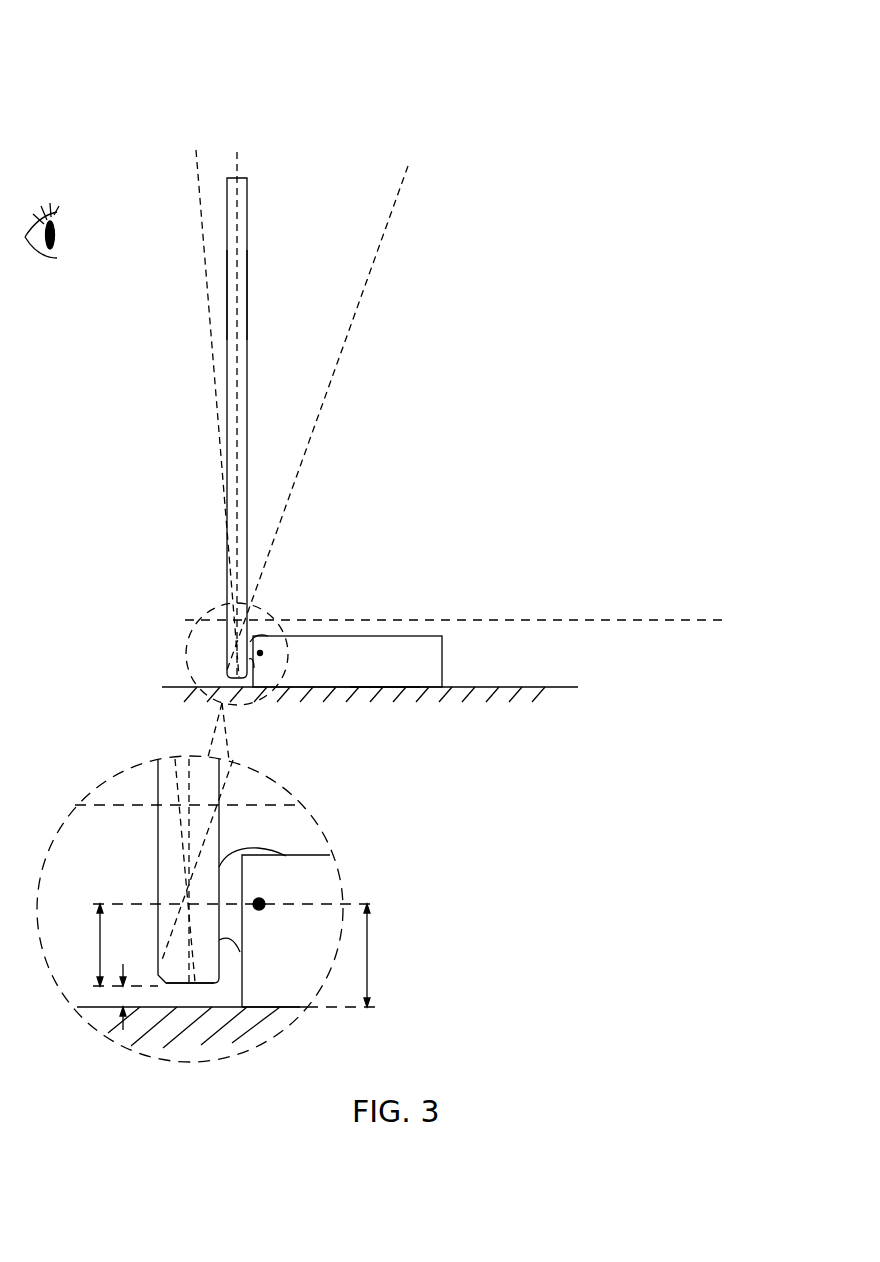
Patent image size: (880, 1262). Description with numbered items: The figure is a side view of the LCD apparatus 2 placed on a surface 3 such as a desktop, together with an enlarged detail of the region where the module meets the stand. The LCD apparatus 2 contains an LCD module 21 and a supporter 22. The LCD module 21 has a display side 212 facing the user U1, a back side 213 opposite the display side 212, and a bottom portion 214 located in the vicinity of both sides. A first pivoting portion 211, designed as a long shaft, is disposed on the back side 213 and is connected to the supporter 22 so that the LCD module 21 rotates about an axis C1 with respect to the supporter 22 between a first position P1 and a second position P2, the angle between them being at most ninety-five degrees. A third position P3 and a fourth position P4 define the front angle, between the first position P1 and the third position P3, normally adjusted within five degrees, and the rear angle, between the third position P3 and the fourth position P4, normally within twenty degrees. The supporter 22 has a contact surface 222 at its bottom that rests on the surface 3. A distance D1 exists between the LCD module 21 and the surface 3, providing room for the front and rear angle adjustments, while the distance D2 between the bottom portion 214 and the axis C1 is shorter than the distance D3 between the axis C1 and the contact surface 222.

The LCD apparatus 2 is at (69, 34).
The user U1 is at (26, 237).
The first position P1 is at (196, 150).
The second position P2 is at (420, 707).
The third position P3 is at (237, 152).
The fourth position P4 is at (408, 166).
The LCD module 21 is at (232, 348).
The display side 212 is at (228, 292).
The back side 213 is at (247, 291).
The first pivoting portion 211 is at (251, 672).
The bottom portion 214 is at (190, 985).
The supporter 22 is at (423, 648).
The contact surface 222 is at (383, 690).
The axis C1 is at (260, 652).
The surface 3 is at (569, 687).
The distance between LCD module and surface D1 is at (125, 997).
The distance between bottom portion and axis D2 is at (86, 945).
The distance between axis and contact surface D3 is at (382, 955).